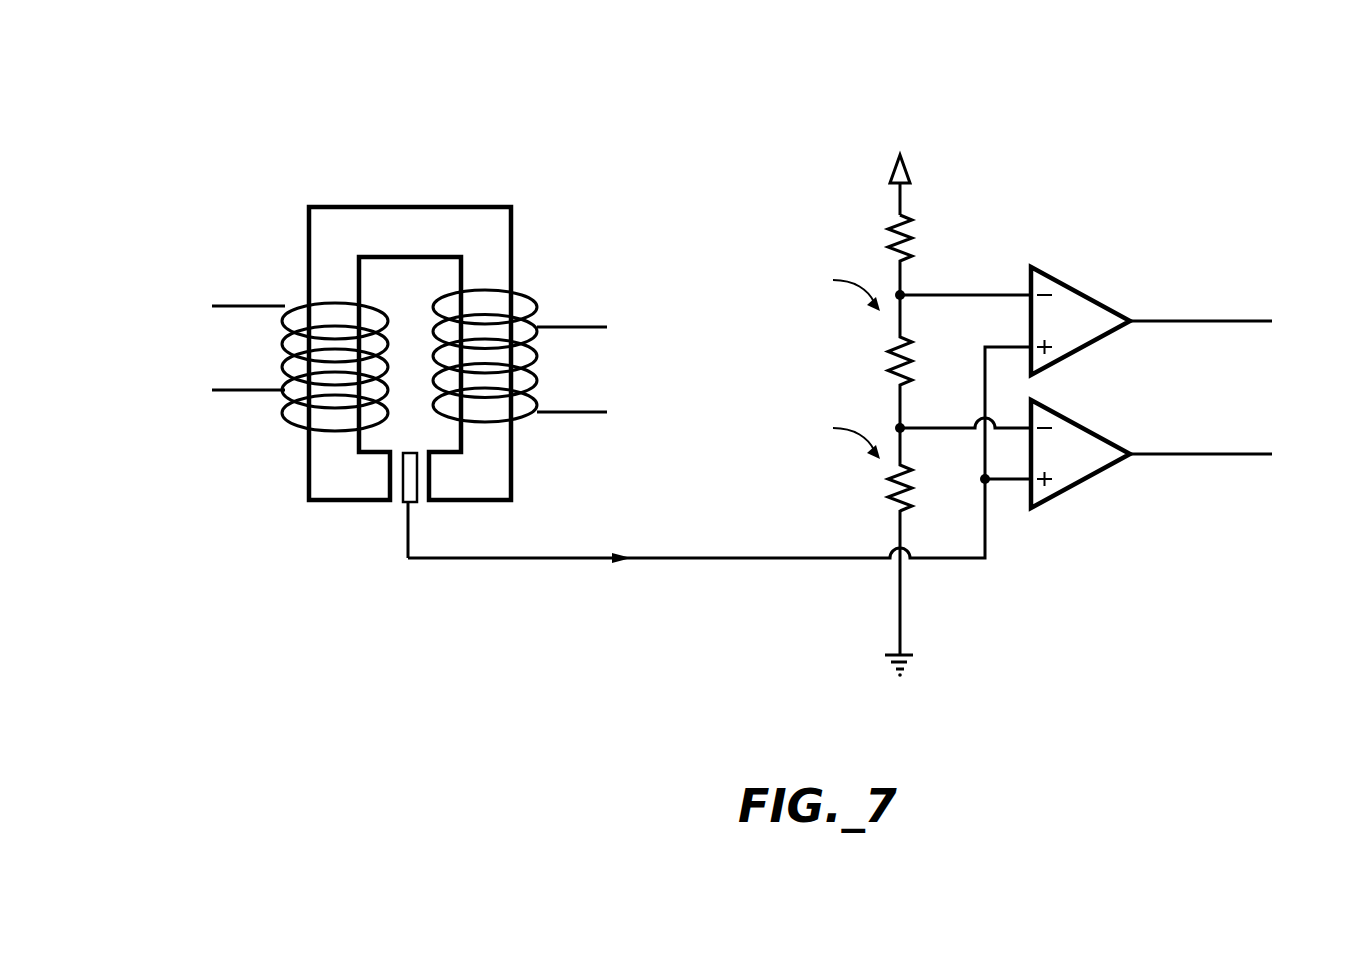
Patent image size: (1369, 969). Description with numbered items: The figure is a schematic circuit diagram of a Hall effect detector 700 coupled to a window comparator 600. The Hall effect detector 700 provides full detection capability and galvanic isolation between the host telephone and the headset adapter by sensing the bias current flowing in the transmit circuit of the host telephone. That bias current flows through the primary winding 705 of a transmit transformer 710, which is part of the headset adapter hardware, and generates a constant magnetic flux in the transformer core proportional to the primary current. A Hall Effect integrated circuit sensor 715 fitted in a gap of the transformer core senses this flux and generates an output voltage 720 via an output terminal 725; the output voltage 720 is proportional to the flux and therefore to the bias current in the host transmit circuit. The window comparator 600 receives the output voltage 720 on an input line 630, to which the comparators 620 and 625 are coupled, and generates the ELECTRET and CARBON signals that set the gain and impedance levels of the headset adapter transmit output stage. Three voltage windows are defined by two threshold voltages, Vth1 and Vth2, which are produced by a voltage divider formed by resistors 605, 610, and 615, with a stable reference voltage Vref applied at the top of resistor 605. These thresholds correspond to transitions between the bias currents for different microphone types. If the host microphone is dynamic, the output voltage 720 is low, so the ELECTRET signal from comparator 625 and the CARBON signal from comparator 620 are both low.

The Hall effect detector 700 is at (376, 84).
The transmit transformer 710 is at (320, 233).
The primary winding 705 is at (290, 422).
The Hall Effect integrated circuit sensor 715 is at (408, 477).
The output terminal 725 is at (406, 505).
The output voltage 720 is at (580, 560).
The input line 630 is at (727, 560).
The window comparator 600 is at (964, 605).
The resistor 605 is at (912, 216).
The resistor 610 is at (892, 363).
The resistor 615 is at (890, 493).
The comparator 620 is at (1078, 291).
The comparator 625 is at (1070, 490).